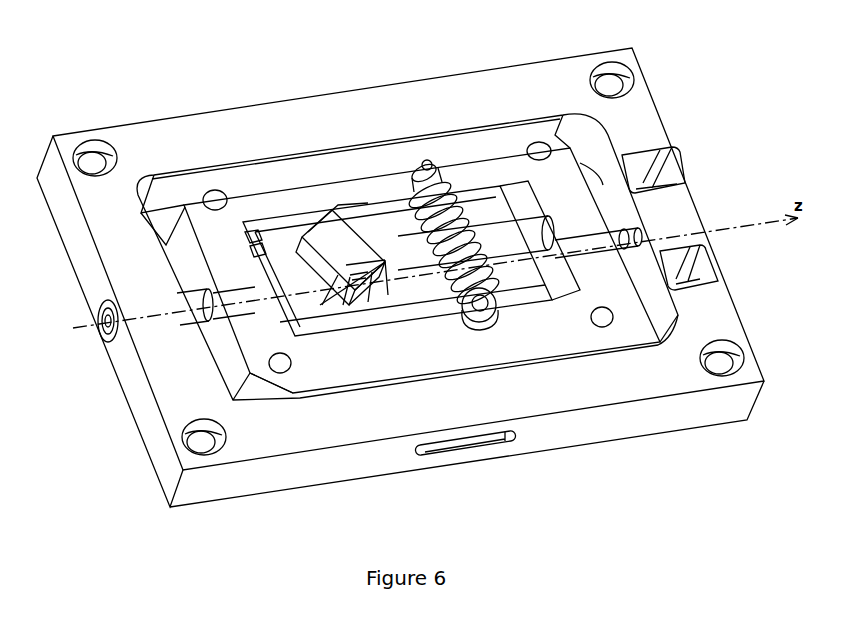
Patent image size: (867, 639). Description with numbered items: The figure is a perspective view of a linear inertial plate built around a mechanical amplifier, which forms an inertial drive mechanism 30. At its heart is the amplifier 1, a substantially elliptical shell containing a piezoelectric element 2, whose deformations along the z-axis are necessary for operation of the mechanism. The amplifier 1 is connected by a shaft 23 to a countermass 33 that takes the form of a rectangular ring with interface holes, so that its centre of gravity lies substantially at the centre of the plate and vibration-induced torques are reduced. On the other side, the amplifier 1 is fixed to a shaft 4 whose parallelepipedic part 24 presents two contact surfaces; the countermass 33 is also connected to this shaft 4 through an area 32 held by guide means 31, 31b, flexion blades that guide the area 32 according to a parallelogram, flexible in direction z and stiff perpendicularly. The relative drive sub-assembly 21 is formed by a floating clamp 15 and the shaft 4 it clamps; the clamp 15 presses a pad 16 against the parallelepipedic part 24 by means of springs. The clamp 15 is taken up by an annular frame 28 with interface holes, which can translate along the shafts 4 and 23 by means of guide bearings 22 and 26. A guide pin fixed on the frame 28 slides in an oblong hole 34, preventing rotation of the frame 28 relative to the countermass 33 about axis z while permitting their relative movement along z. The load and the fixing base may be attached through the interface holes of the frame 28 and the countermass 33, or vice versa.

The inertial drive mechanism 30 is at (65, 83).
The countermass 33 is at (150, 152).
The relative drive sub-assembly 21 is at (288, 62).
The floating clamp 15 is at (374, 62).
The frame 28 is at (477, 151).
The pad 16 is at (402, 210).
The amplifier 1 is at (317, 215).
The parallelepipedic part 24 is at (497, 250).
The guide means 31 is at (681, 167).
The shaft 4 is at (655, 212).
The area 32 is at (636, 236).
The guide means 31b is at (718, 261).
The shaft 23 is at (187, 295).
The guide bearing 26 is at (213, 323).
The piezoelectric element 2 is at (343, 297).
The guide bearing 22 is at (553, 273).
The oblong hole 34 is at (467, 447).